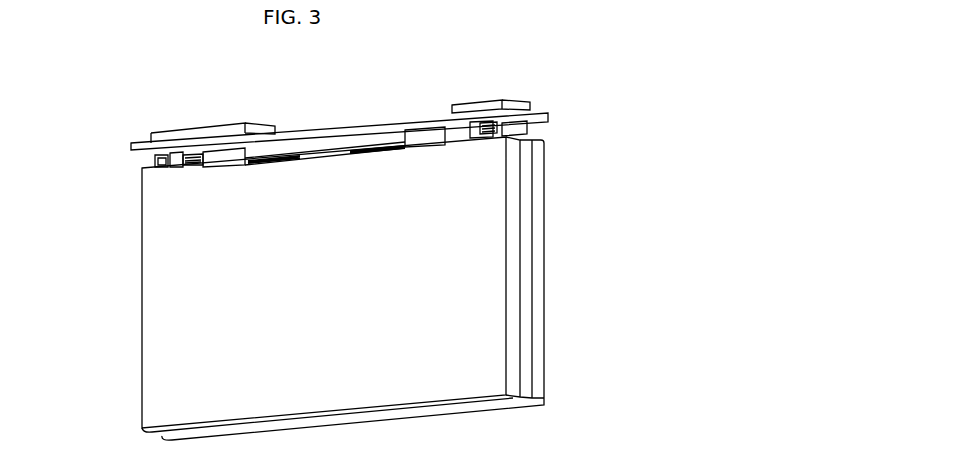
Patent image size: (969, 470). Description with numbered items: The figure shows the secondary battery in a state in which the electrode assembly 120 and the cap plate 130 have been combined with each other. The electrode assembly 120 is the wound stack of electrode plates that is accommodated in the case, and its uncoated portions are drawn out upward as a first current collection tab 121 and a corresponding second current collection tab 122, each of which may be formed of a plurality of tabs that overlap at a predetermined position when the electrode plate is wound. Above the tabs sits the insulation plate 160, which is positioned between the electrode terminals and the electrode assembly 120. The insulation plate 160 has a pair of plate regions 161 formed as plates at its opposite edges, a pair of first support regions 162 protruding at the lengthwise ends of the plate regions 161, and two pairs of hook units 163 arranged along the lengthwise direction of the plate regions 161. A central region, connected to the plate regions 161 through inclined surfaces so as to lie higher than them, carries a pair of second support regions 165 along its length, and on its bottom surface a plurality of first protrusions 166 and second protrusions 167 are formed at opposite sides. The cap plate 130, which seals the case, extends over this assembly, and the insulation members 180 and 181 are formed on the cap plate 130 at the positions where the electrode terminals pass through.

The electrode assembly 120 is at (517, 327).
The first current collection tab 121 is at (215, 167).
The second current collection tab 122 is at (433, 145).
The cap plate 130 is at (310, 131).
The insulation plate 160 is at (146, 162).
The plate regions 161 is at (448, 128).
The first support regions 162 is at (528, 130).
The hook units 163 is at (178, 167).
The second support regions 165 is at (372, 147).
The first protrusions 166 is at (245, 167).
The second protrusions 167 is at (386, 148).
The insulation member 180 is at (192, 128).
The insulation member 181 is at (490, 103).